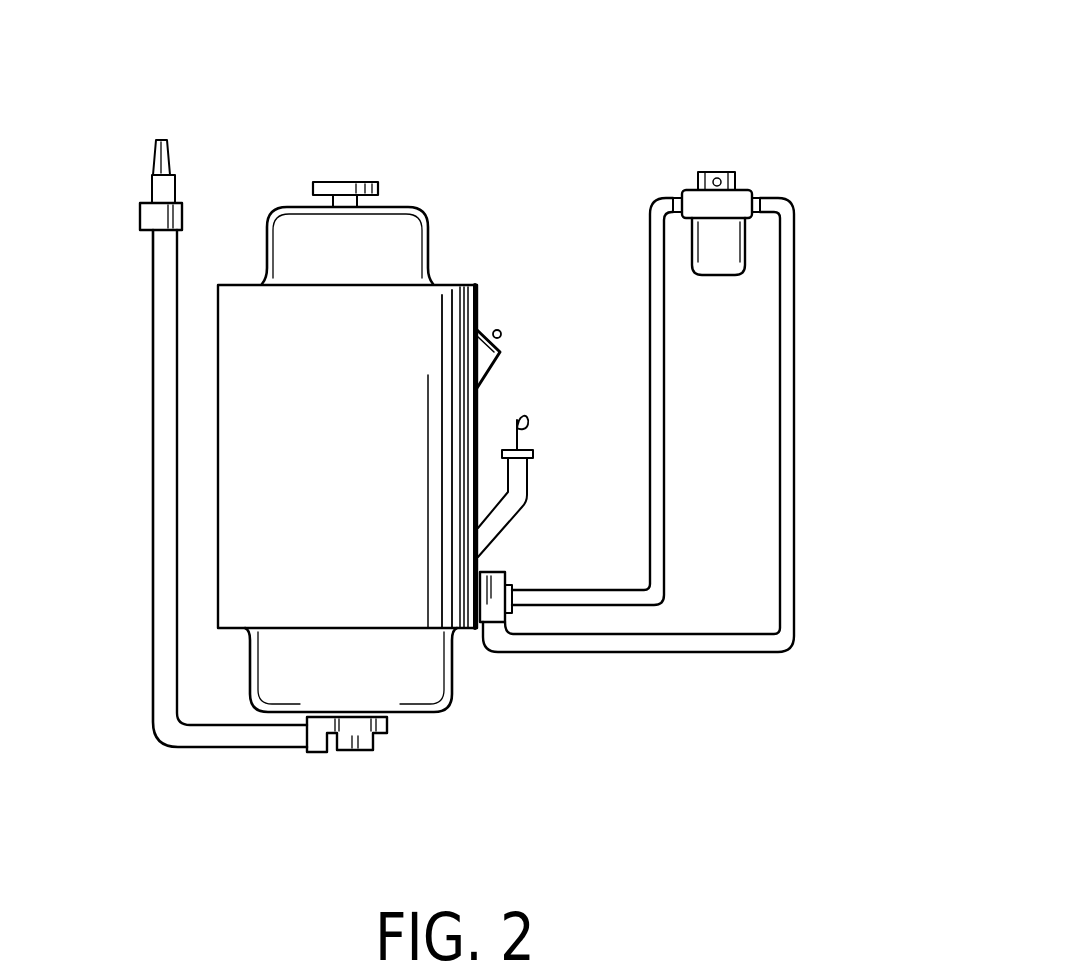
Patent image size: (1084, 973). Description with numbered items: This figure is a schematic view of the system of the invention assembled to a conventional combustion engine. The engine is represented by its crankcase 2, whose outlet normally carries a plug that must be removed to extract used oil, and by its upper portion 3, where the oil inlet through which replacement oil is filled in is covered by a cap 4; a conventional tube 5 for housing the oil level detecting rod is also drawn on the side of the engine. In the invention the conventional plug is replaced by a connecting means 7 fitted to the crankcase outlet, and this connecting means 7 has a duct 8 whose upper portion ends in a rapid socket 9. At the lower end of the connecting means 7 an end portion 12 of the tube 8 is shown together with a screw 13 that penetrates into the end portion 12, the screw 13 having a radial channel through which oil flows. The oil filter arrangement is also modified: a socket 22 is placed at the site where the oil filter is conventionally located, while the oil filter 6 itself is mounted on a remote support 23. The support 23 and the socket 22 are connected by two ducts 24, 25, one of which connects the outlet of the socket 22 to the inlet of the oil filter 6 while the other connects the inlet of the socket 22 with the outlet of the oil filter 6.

The crankcase 2 is at (457, 667).
The upper portion 3 is at (427, 257).
The cap 4 is at (342, 182).
The tube 5 is at (477, 533).
The oil filter 6 is at (733, 238).
The connecting means 7 is at (405, 765).
The duct 8 is at (155, 537).
The rapid socket 9 is at (178, 192).
The end portion 12 is at (388, 725).
The screw 13 is at (337, 748).
The socket 22 is at (512, 573).
The remote support 23 is at (748, 178).
The duct 24 is at (665, 477).
The duct 25 is at (792, 497).